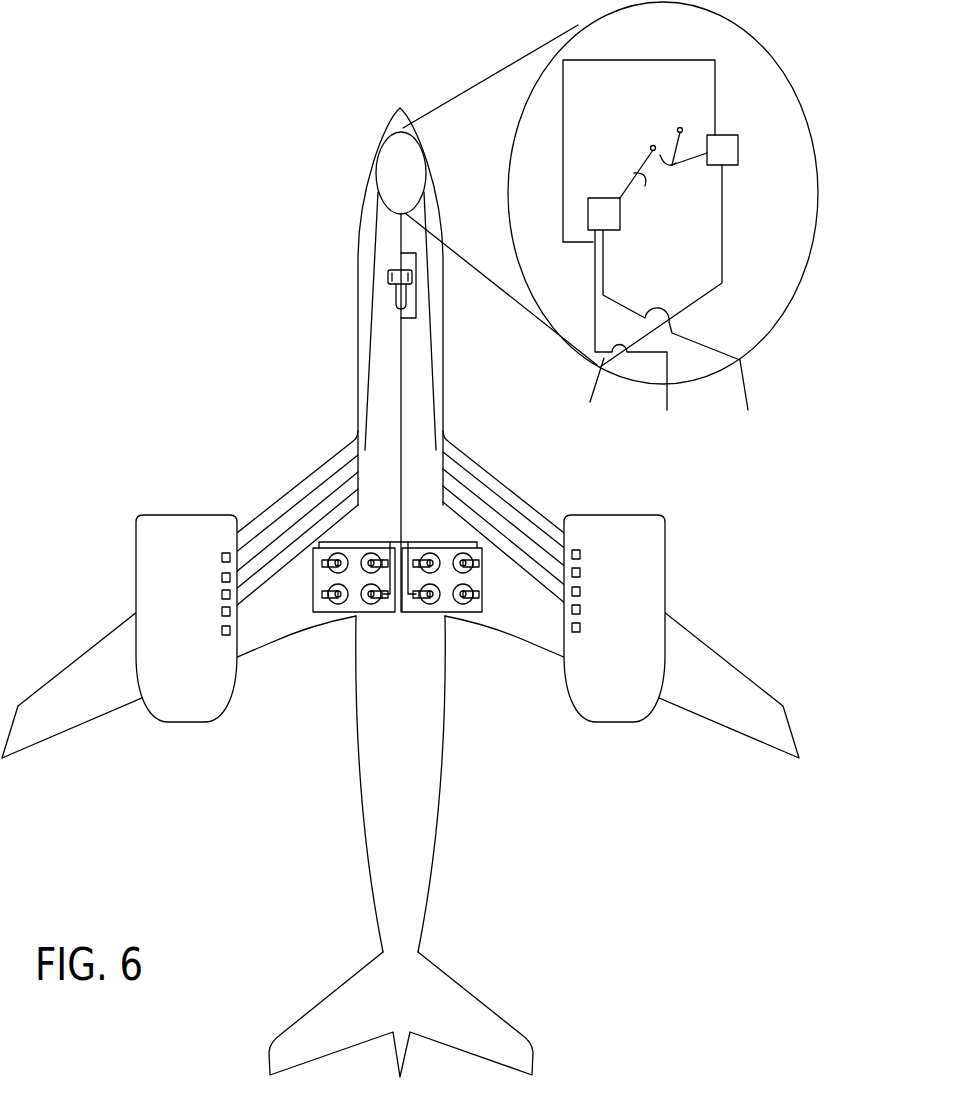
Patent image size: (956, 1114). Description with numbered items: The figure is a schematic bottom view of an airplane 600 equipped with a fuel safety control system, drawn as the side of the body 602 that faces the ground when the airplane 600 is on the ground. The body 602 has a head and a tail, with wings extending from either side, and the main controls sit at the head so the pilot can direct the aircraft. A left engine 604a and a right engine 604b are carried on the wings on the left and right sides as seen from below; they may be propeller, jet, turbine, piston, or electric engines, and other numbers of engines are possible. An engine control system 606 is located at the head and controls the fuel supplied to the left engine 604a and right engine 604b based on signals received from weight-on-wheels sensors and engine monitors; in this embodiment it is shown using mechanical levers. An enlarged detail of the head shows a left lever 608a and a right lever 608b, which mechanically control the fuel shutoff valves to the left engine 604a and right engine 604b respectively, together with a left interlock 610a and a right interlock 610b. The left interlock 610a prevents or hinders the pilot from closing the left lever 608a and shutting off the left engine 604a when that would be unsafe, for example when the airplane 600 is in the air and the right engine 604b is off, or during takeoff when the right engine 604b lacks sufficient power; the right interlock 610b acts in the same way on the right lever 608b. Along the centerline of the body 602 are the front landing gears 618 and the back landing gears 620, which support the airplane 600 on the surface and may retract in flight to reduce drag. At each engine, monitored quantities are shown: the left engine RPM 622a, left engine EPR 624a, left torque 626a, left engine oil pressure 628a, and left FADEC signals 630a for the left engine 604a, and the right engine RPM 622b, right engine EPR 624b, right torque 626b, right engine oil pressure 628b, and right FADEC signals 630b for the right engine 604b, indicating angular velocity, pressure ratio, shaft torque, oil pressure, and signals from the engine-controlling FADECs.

The airplane 600 is at (125, 122).
The body 602 is at (360, 742).
The left engine 604a is at (173, 722).
The right engine 604b is at (600, 722).
The engine control system 606 is at (377, 190).
The left lever 608a is at (638, 163).
The right lever 608b is at (672, 134).
The left interlock 610a is at (608, 198).
The right interlock 610b is at (767, 125).
The front landing gears 618 is at (398, 297).
The back landing gears 620 is at (368, 614).
The left engine RPM 622a is at (203, 557).
The left engine EPR 624a is at (203, 576).
The left torque 626a is at (203, 594).
The left engine oil pressure 628a is at (203, 611).
The left FADEC signals 630a is at (203, 630).
The right engine RPM 622b is at (599, 554).
The right engine EPR 624b is at (599, 572).
The right torque 626b is at (599, 591).
The right engine oil pressure 628b is at (599, 609).
The right FADEC signals 630b is at (599, 627).